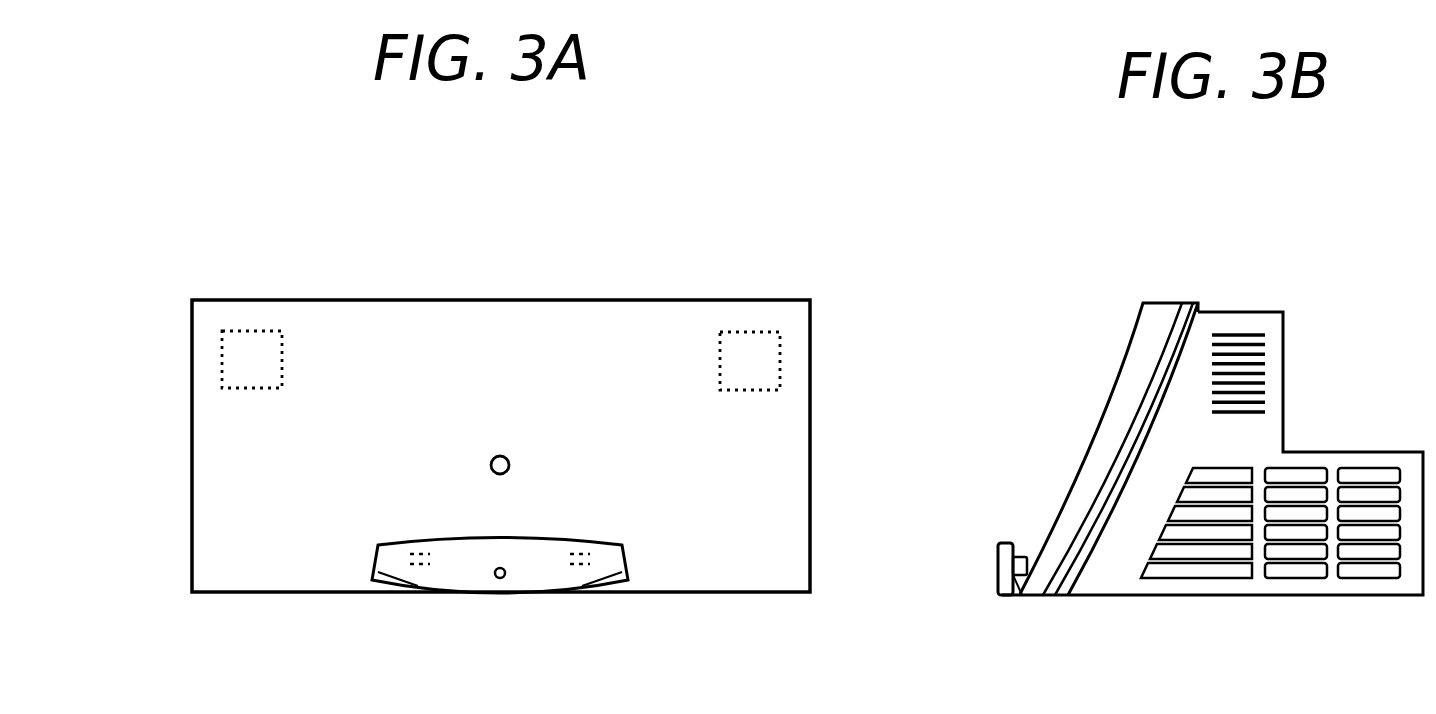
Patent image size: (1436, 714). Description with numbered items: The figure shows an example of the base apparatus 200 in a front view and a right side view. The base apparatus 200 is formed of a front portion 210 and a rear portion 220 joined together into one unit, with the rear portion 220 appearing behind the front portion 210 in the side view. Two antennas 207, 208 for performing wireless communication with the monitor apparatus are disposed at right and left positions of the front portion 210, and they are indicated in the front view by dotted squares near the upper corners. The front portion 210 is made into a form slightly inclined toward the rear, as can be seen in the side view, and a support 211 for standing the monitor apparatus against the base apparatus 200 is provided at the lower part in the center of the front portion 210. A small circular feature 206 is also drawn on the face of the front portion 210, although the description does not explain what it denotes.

In FIG. 3A, the base apparatus 200 is at (752, 259).
In FIG. 3A, the opening 206 is at (490, 466).
In FIG. 3A, the antenna 207 is at (224, 357).
In FIG. 3A, the antenna 208 is at (768, 368).
In FIG. 3A, the front portion 210 is at (626, 308).
In FIG. 3B, the front portion 210 is at (1093, 447).
In FIG. 3A, the support 211 is at (537, 580).
In FIG. 3B, the support 211 is at (1003, 578).
In FIG. 3B, the rear portion 220 is at (1376, 452).